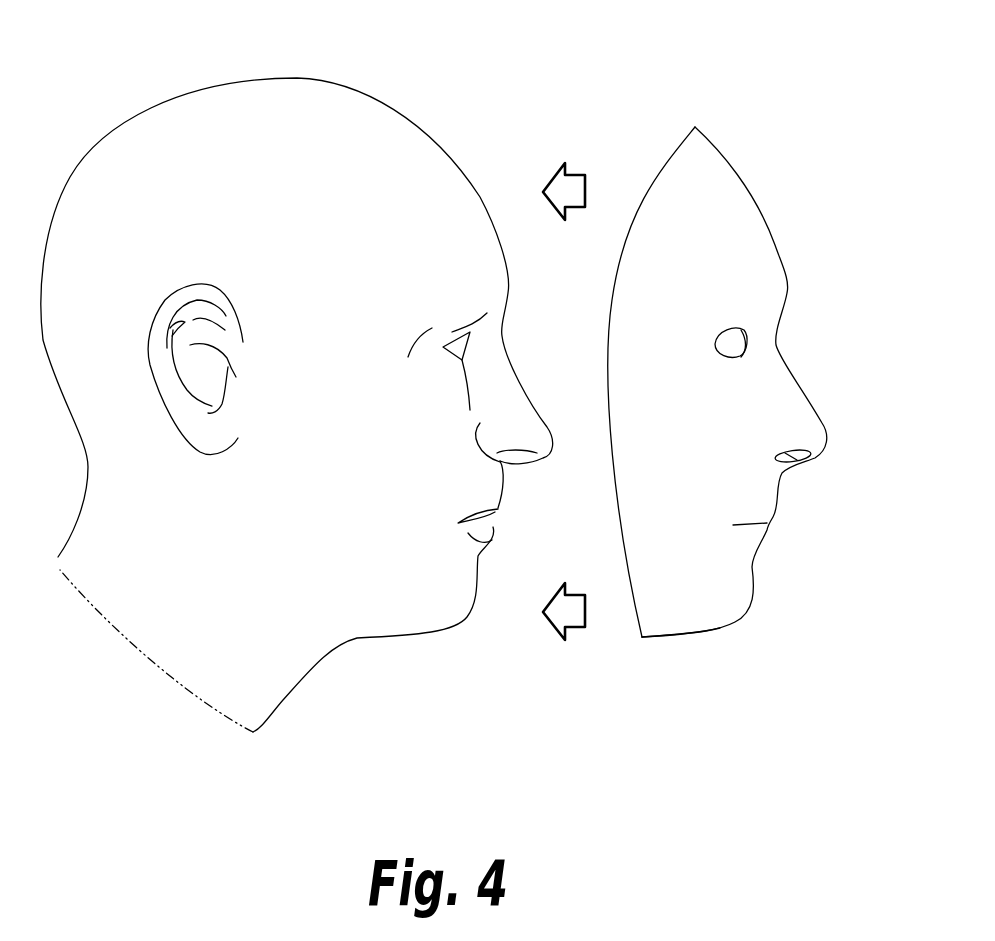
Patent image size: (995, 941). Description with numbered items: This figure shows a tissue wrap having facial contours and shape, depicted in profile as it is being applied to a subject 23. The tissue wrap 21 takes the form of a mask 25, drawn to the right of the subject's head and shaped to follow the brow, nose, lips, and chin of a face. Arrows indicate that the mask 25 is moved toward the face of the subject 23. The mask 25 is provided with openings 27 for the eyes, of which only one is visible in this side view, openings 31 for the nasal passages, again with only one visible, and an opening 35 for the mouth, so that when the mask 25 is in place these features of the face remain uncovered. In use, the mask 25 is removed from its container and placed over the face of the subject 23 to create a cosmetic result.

The subject 23 is at (307, 168).
The tissue wrap 21 is at (712, 188).
The openings for the eyes 27 is at (733, 343).
The openings for nasal passages 31 is at (800, 463).
The opening for the mouth 35 is at (767, 523).
The mask 25 is at (707, 632).